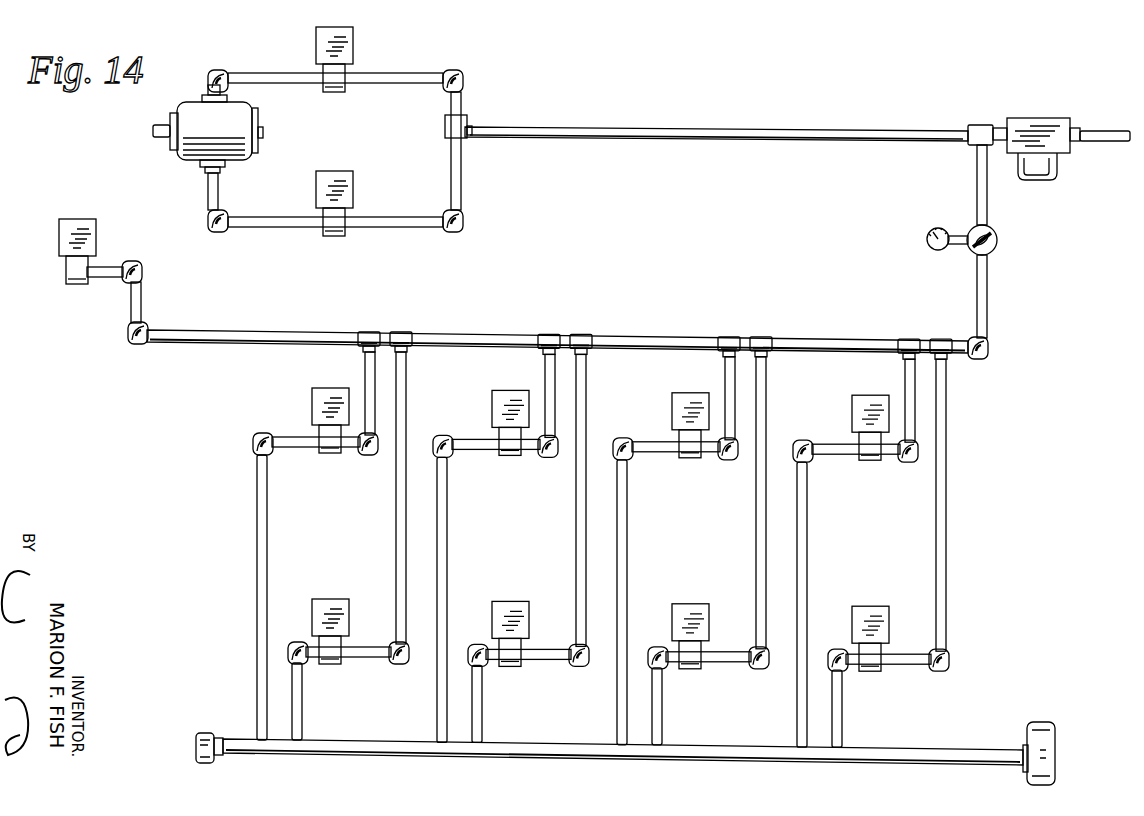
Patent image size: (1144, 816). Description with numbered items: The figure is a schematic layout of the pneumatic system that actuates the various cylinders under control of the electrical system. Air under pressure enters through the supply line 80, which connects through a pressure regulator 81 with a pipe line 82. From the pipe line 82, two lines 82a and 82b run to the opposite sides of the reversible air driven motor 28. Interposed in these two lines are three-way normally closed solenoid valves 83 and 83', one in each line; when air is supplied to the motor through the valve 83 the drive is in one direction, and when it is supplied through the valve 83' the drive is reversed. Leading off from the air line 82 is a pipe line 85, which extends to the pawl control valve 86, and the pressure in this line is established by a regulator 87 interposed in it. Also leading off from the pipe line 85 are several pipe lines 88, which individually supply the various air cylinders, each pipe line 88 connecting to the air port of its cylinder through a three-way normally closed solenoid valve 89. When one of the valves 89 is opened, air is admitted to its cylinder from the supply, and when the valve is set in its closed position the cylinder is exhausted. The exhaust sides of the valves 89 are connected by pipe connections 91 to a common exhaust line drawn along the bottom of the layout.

The reversible air driven motor 28 is at (236, 114).
The supply line 80 is at (1102, 131).
The pressure regulator 81 is at (1038, 117).
The pipe line 82 is at (640, 132).
The line 82a is at (380, 228).
The line 82b is at (390, 84).
The three-way normally closed solenoid valve 83 is at (359, 59).
The three-way normally closed solenoid valve 83' is at (359, 203).
The pipe line 85 is at (988, 197).
The pawl control valve 86 is at (97, 234).
The regulator 87 is at (994, 254).
The pipe lines 88 is at (365, 362).
The three-way normally closed solenoid valve 89 is at (312, 408).
The pipe connections 91 is at (257, 597).